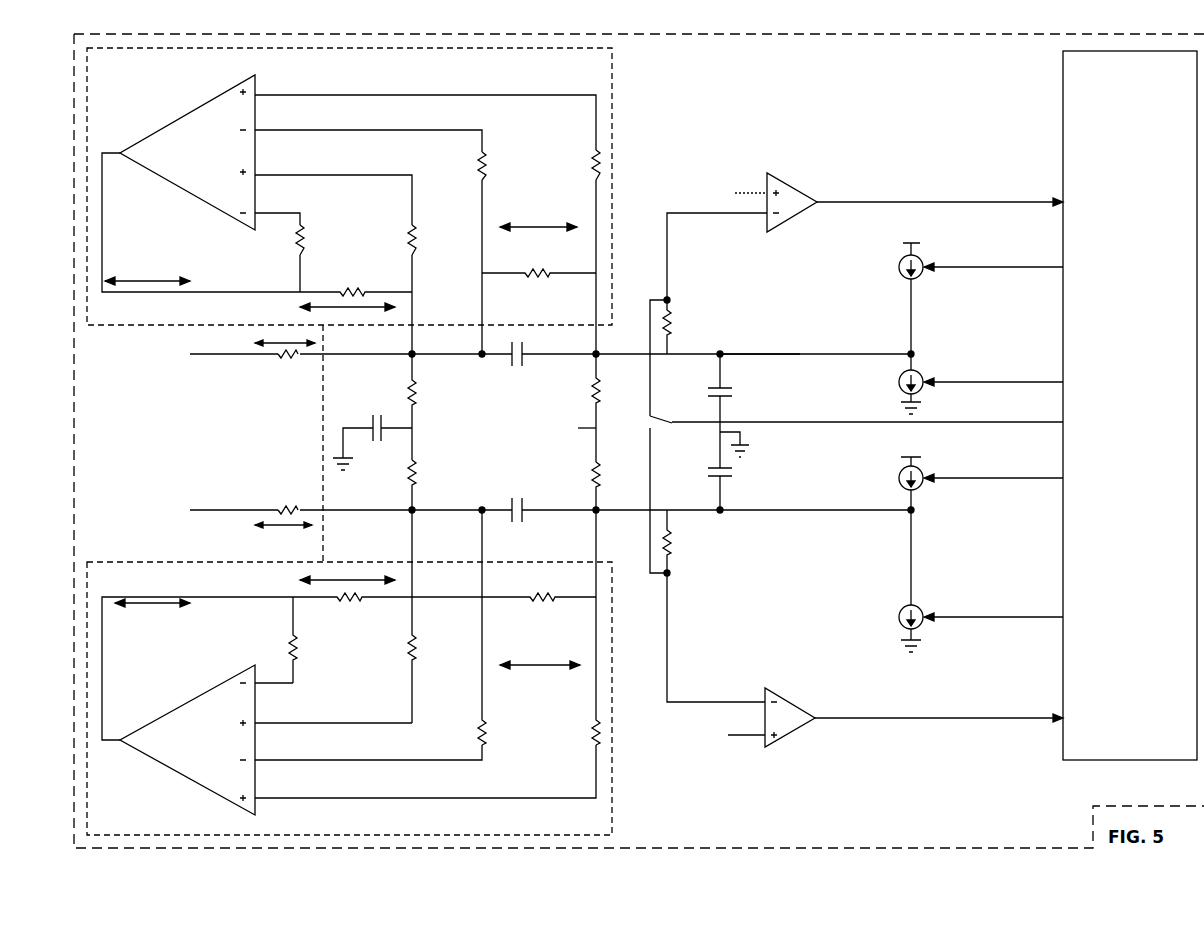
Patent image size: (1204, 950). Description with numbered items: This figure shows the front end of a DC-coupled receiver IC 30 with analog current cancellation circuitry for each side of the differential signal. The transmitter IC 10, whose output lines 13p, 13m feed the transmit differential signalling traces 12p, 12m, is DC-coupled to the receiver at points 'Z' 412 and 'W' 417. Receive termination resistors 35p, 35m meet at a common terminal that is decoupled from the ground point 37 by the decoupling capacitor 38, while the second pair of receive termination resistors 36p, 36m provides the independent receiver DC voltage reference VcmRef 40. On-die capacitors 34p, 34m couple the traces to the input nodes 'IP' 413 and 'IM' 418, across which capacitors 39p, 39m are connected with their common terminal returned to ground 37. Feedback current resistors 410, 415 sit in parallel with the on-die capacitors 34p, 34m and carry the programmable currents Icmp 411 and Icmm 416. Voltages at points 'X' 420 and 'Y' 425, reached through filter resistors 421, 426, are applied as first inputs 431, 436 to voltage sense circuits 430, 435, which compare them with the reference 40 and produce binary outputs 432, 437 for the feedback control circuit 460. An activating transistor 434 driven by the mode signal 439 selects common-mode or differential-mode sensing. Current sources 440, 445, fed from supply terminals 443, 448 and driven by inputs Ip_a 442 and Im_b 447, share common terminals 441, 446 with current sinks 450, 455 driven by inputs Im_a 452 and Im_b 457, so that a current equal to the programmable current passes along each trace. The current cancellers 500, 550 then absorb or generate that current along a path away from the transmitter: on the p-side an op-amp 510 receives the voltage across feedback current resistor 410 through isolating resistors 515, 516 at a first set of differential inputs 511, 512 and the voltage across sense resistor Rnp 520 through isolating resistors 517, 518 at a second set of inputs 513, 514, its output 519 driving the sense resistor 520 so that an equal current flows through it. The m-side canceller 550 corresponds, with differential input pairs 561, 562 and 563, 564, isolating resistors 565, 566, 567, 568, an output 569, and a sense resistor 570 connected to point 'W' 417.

The receiver IC 30 is at (1080, 841).
The transmitter IC 10 is at (171, 420).
The transmit differential signalling trace 12p is at (296, 362).
The transmit differential signalling trace 12m is at (298, 504).
The transmitter positive output line 13p is at (265, 356).
The transmitter negative output line 13m is at (193, 513).
The on-die capacitor 34p is at (524, 340).
The on-die capacitor 34m is at (522, 528).
The receive termination resistor 35p is at (420, 396).
The receive termination resistor 35m is at (420, 472).
The second receive termination resistor 36p is at (590, 392).
The second receive termination resistor 36m is at (590, 480).
The ground point 37 is at (348, 470).
The decoupling capacitor 38 is at (376, 414).
The capacitor 39p is at (726, 388).
The capacitor 39m is at (730, 478).
The receiver DC voltage reference 40 is at (582, 434).
The feedback current resistor 410 is at (528, 278).
The programmable current 411 is at (395, 307).
The point 'Z' 412 is at (472, 370).
The positive input node IP 413 is at (598, 354).
The feedback current resistor 415 is at (530, 600).
The programmable current 416 is at (392, 598).
The point 'W' 417 is at (478, 516).
The negative input node IM 418 is at (598, 512).
The point 'X' 420 is at (670, 298).
The filter resistor 421 is at (672, 322).
The point 'Y' 425 is at (672, 578).
The filter resistor 426 is at (672, 548).
The voltage sense circuit 430 is at (788, 180).
The first input 431 is at (667, 213).
The output 432 is at (872, 202).
The activating transistor 434 is at (650, 432).
The voltage sense circuit 435 is at (776, 692).
The first input 436 is at (676, 702).
The output 437 is at (860, 720).
The mode signal 439 is at (992, 422).
The current source 440 is at (902, 276).
The common terminal 441 is at (915, 354).
The input Ip_a 442 is at (984, 267).
The supply terminal 443 is at (916, 242).
The current source 445 is at (900, 482).
The common terminal 446 is at (914, 514).
The input Im_b 447 is at (1040, 478).
The supply terminal 448 is at (916, 457).
The current sink 450 is at (902, 388).
The input Im_a 452 is at (992, 382).
The current sink 455 is at (900, 610).
The input Im_b 457 is at (1046, 617).
The feedback control circuit 460 is at (1188, 754).
The current canceller 500 is at (583, 80).
The op-amp 510 is at (216, 162).
The differential input 511 is at (492, 96).
The differential input 512 is at (352, 130).
The differential input 513 is at (322, 175).
The differential input 514 is at (278, 213).
The isolating resistor 515 is at (602, 165).
The isolating resistor 516 is at (488, 165).
The isolating resistor 517 is at (418, 240).
The isolating resistor 518 is at (306, 234).
The output 519 is at (118, 150).
The sense resistor 520 is at (372, 291).
The current canceller 550 is at (583, 832).
The differential input 561 is at (410, 798).
The differential input 562 is at (350, 763).
The differential input 563 is at (305, 726).
The differential input 564 is at (265, 686).
The isolating resistor 565 is at (594, 748).
The isolating resistor 566 is at (478, 728).
The isolating resistor 567 is at (418, 640).
The isolating resistor 568 is at (290, 656).
The output 569 is at (118, 738).
The sense resistor 570 is at (340, 596).